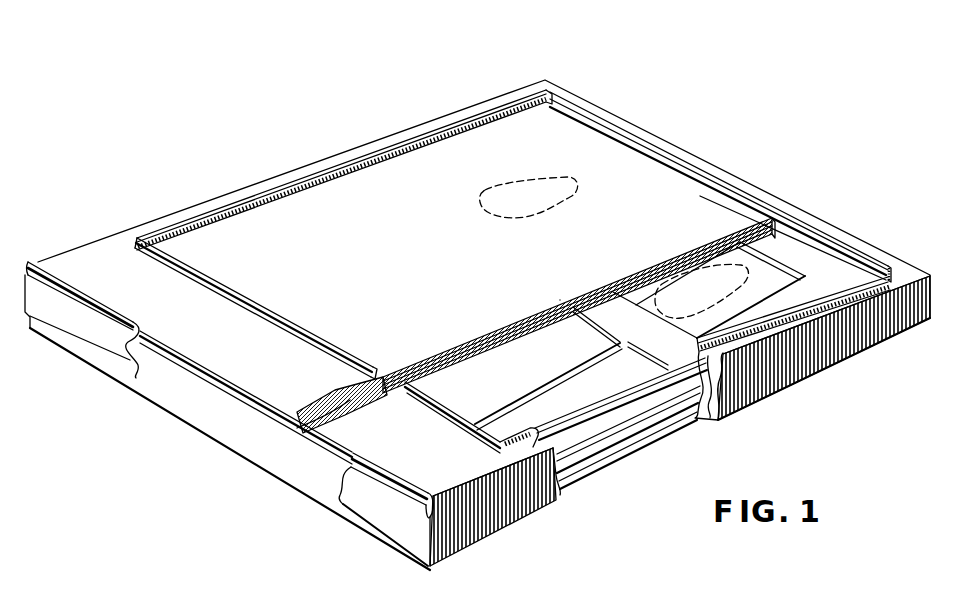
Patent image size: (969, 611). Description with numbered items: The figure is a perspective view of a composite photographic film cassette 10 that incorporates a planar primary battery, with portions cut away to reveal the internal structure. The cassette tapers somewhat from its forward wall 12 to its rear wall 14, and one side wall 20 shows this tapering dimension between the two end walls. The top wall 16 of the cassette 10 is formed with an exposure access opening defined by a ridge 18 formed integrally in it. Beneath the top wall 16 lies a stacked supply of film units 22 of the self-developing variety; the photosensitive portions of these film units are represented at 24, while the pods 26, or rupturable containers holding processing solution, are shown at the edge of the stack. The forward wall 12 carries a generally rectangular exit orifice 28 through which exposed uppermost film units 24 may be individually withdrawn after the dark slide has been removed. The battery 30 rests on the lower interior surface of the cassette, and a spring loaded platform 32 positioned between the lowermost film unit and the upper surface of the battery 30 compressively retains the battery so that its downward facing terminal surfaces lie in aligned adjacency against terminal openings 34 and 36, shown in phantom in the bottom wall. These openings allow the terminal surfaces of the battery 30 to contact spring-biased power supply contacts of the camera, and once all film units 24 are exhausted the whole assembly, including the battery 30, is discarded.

The photographic film cassette 10 is at (394, 112).
The forward wall 12 is at (360, 503).
The rear wall 14 is at (902, 260).
The top wall 16 is at (95, 265).
The ridge 18 is at (307, 177).
The side wall 20 is at (470, 513).
The stacked supply of film units 22 is at (717, 228).
The photosensitive portions of the film units 24 is at (657, 185).
The pods 26 is at (297, 428).
The exit orifice 28 is at (180, 377).
The battery 30 is at (606, 480).
The spring loaded platform 32 is at (660, 343).
The terminal opening 34 is at (740, 266).
The terminal opening 36 is at (533, 180).